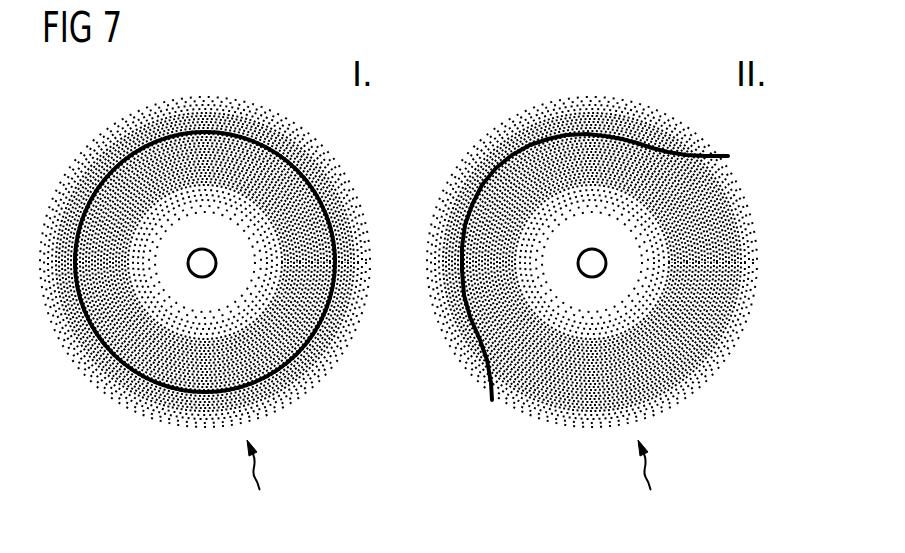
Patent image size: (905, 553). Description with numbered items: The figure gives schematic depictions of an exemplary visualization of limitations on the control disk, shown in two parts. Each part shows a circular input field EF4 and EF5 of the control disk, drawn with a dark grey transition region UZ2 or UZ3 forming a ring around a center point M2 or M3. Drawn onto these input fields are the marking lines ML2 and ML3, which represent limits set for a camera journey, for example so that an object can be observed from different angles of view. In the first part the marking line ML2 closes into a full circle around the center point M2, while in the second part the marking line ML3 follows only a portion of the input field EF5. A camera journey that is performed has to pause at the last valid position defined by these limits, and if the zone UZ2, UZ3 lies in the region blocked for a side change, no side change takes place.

The marking line ML2 is at (125, 152).
The center point M2 is at (202, 263).
The transition region UZ2 is at (102, 372).
The input field EF4 is at (261, 482).
The marking line ML3 is at (517, 167).
The center point M3 is at (592, 263).
The transition region UZ3 is at (698, 372).
The input field EF5 is at (652, 482).